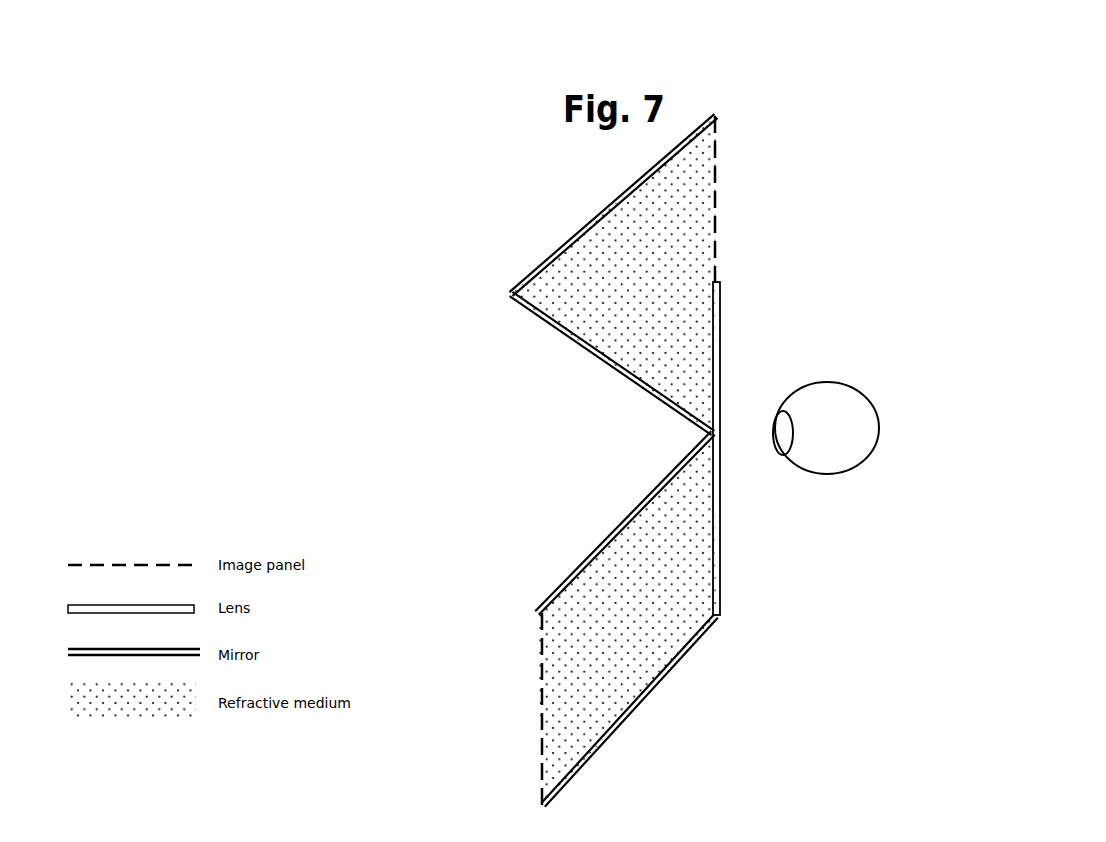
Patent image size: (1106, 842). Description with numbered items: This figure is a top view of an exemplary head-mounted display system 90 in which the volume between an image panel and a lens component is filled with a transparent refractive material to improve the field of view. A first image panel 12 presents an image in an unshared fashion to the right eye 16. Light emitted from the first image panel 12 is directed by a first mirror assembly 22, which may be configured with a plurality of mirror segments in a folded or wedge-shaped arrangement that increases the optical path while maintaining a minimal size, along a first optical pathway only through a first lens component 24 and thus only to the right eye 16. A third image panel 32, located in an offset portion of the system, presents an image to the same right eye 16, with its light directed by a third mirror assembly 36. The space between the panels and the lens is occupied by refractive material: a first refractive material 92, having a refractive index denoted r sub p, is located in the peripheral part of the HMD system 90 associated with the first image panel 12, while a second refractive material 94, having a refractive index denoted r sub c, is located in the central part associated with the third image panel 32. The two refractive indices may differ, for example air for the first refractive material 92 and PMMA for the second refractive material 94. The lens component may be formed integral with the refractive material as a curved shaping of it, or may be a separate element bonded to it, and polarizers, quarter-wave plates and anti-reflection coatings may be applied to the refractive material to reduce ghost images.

The first image panel 12 is at (715, 181).
The right eye 16 is at (878, 418).
The first mirror assembly 22 is at (480, 298).
The first lens component 24 is at (720, 310).
The third image panel 32 is at (537, 690).
The third mirror assembly 36 is at (672, 663).
The head-mounted display system 90 is at (988, 214).
The first refractive material 92 is at (630, 207).
The second refractive material 94 is at (673, 600).